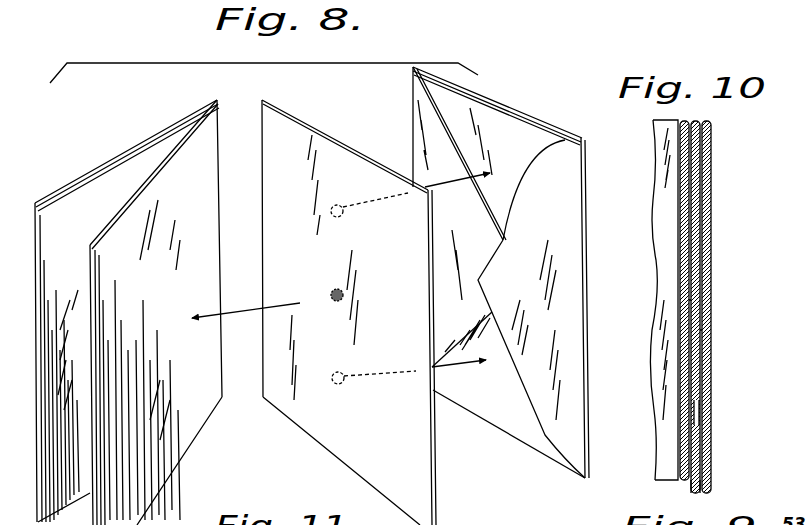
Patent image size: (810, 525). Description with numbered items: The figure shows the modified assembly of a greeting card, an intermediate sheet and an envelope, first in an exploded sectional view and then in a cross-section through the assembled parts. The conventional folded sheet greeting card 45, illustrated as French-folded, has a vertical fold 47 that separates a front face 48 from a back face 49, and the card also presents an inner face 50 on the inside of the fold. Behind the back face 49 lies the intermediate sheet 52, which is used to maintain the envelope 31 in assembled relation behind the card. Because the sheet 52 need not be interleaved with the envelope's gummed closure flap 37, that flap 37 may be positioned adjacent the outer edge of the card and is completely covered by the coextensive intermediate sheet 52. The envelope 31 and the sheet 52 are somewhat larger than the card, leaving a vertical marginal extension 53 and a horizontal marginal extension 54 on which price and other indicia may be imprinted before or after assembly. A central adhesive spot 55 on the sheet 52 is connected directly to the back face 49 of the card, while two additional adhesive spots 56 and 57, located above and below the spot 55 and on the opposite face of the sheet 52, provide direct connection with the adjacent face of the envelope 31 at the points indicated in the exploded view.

In FIG. 8, the envelope 31 is at (413, 92).
In FIG. 10, the envelope 31 is at (713, 462).
In FIG. 8, the gummed closure flap 37 is at (560, 326).
In FIG. 10, the gummed closure flap 37 is at (702, 333).
In FIG. 8, the folded sheet greeting card 45 is at (201, 186).
In FIG. 8, the vertical fold 47 is at (220, 120).
In FIG. 8, the front face 48 is at (34, 203).
In FIG. 8, the back face 49 is at (182, 432).
In FIG. 8, the inner face 50 is at (143, 150).
In FIG. 10, the inner face 50 is at (661, 243).
In FIG. 8, the intermediate sheet 52 is at (334, 161).
In FIG. 10, the intermediate sheet 52 is at (694, 116).
In FIG. 8, the vertical marginal extension 53 is at (425, 433).
In FIG. 8, the horizontal marginal extension 54 is at (346, 450).
In FIG. 10, the horizontal marginal extension 54 is at (696, 489).
In FIG. 8, the central adhesive spot 55 is at (332, 292).
In FIG. 10, the central adhesive spot 55 is at (701, 304).
In FIG. 8, the adhesive spot 56 is at (344, 213).
In FIG. 10, the adhesive spot 56 is at (703, 190).
In FIG. 8, the adhesive spot 57 is at (341, 384).
In FIG. 10, the adhesive spot 57 is at (700, 421).